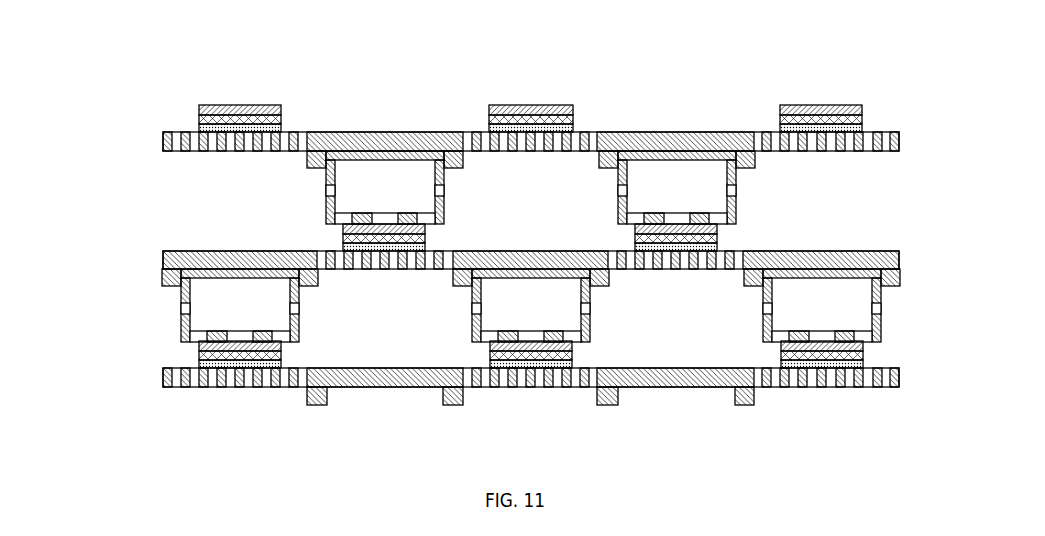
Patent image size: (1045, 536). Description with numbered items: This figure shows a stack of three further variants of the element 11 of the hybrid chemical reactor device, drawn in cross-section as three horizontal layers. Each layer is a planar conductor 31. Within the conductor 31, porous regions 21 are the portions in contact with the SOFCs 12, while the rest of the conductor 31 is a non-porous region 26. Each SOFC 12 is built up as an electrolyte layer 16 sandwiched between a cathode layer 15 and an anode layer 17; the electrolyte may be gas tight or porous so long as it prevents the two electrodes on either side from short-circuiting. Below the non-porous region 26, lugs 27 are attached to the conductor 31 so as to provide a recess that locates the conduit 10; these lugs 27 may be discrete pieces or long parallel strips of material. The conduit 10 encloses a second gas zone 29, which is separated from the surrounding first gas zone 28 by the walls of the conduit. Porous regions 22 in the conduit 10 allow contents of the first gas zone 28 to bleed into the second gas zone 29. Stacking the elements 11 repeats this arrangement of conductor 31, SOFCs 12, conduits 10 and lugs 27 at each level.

The conduit 10 is at (330, 206).
The element of the hybrid chemical reactor device 11 is at (137, 62).
The SOFC 12 is at (478, 89).
The cathode layer 15 is at (494, 127).
The electrolyte layer 16 is at (500, 118).
The anode layer 17 is at (518, 110).
The porous region 21 is at (249, 382).
The porous region 22 is at (732, 192).
The non-porous region 26 is at (667, 125).
The lug 27 is at (752, 402).
The first gas zone 28 is at (550, 211).
The second gas zone 29 is at (378, 200).
The conductor 31 is at (897, 132).